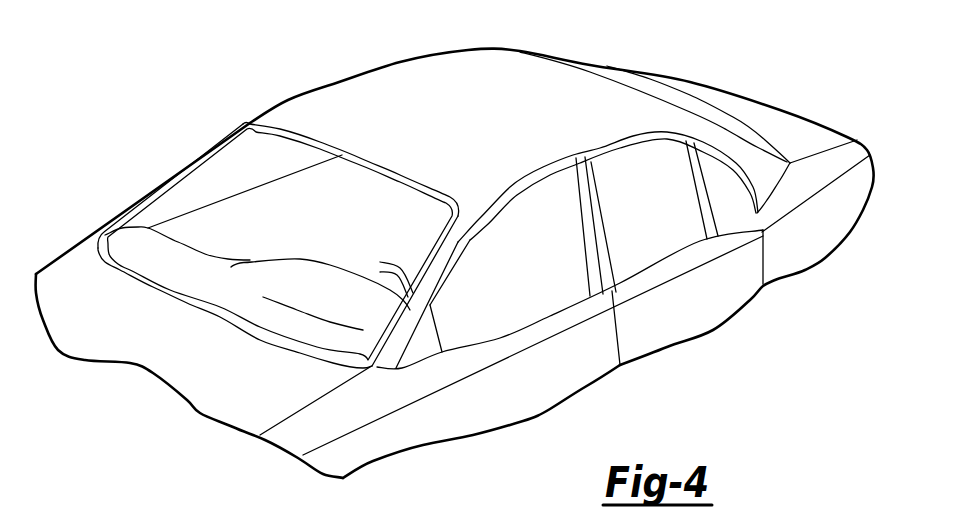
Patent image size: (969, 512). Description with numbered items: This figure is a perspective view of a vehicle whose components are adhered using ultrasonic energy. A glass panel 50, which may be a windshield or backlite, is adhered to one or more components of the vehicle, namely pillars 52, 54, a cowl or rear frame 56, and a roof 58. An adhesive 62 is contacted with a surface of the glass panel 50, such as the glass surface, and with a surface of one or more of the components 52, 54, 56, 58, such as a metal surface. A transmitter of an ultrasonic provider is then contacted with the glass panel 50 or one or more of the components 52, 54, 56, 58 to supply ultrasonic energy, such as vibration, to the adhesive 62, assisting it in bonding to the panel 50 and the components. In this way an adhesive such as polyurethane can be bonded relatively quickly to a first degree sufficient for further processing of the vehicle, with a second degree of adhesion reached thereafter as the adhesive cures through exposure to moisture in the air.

The glass panel 50 is at (265, 228).
The pillar 52 is at (147, 192).
The pillar 54 is at (445, 268).
The cowl or rear frame 56 is at (237, 327).
The roof 58 is at (318, 147).
The adhesive 62 is at (222, 143).